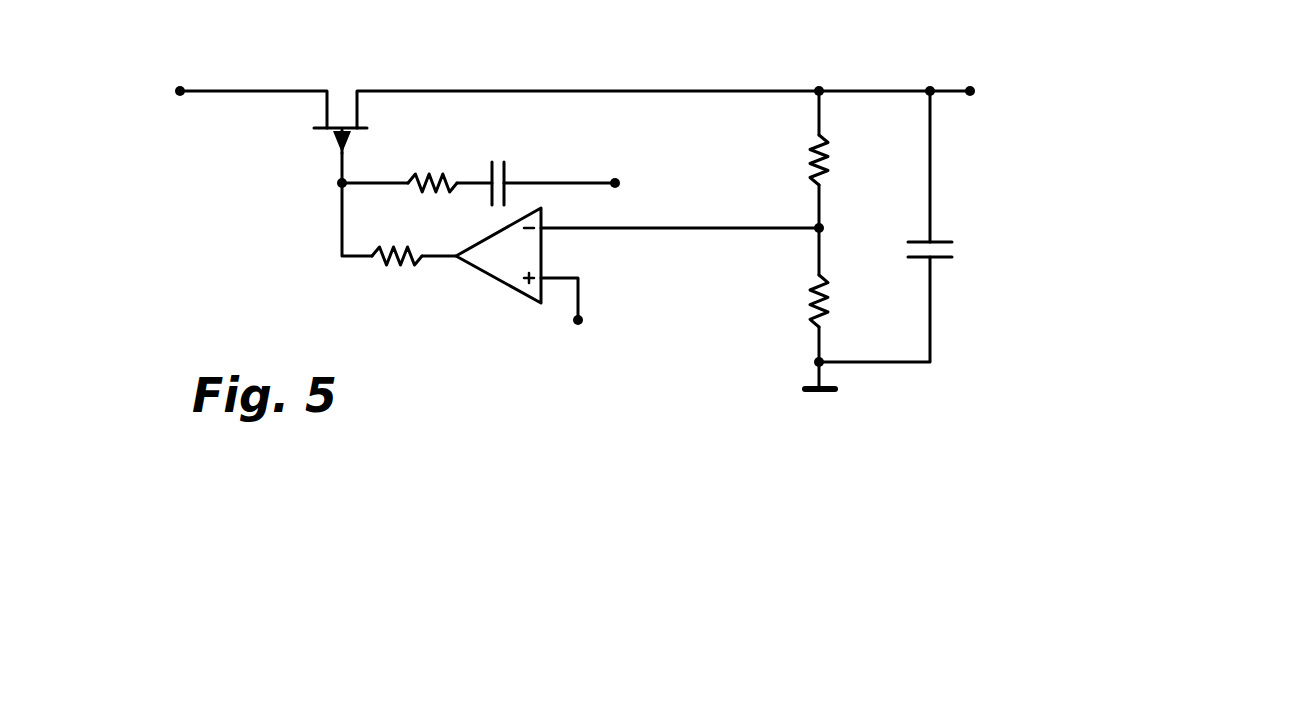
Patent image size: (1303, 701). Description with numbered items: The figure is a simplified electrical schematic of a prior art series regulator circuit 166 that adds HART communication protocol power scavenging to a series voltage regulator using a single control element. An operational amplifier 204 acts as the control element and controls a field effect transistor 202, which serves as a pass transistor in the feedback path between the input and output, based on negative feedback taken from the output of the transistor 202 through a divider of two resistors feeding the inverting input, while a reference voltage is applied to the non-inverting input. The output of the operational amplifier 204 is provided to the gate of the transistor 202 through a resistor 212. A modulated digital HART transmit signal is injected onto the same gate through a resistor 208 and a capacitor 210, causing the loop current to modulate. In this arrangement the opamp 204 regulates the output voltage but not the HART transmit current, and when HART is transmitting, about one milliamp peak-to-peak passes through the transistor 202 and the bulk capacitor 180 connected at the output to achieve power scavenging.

The circuit 166 is at (234, 219).
The field effect transistor 202 is at (322, 110).
The resistor 208 is at (418, 175).
The capacitor 210 is at (502, 163).
The resistor 212 is at (383, 247).
The operational amplifier 204 is at (475, 270).
The bulk capacitor 180 is at (937, 240).